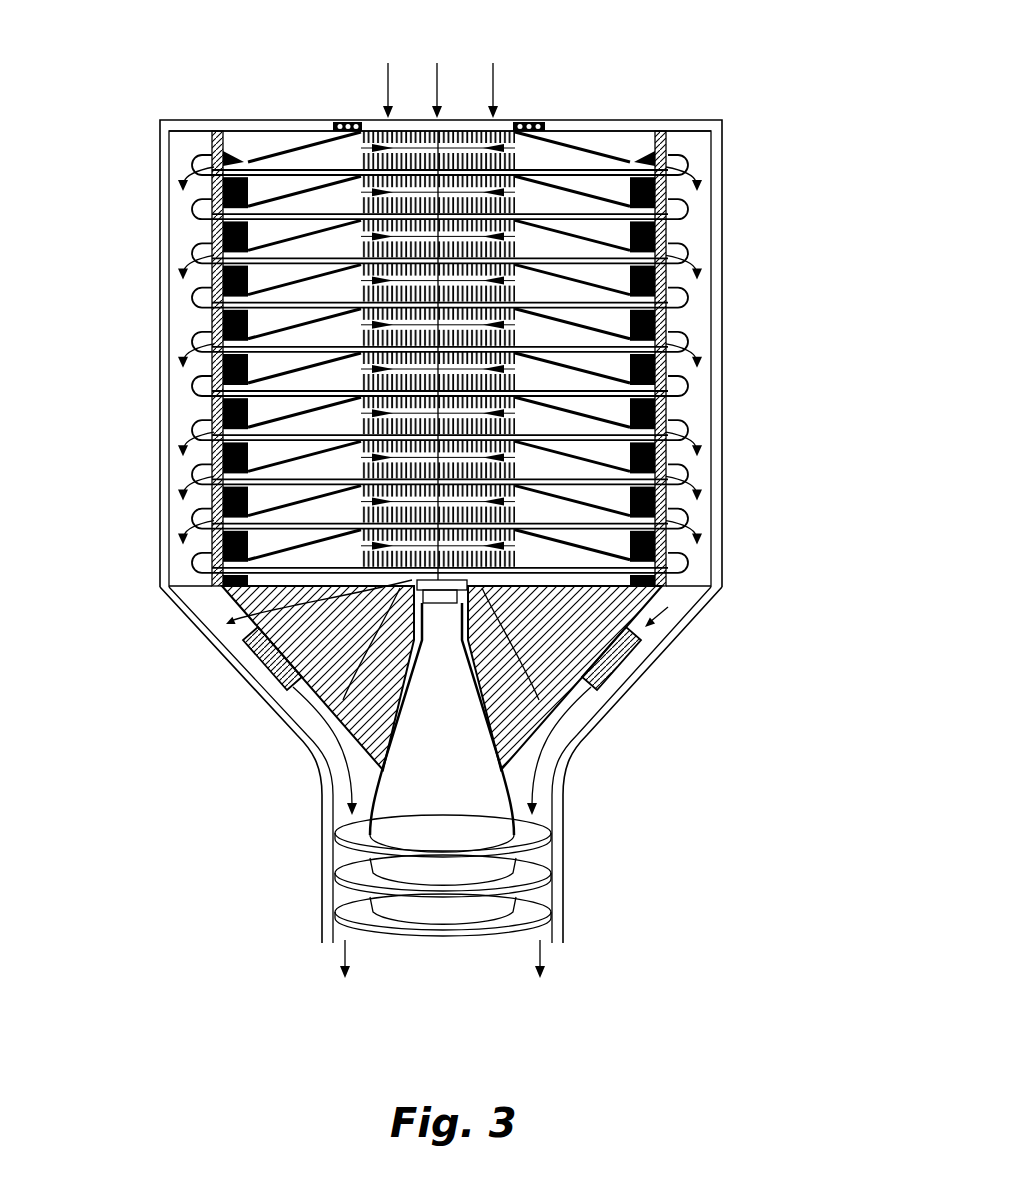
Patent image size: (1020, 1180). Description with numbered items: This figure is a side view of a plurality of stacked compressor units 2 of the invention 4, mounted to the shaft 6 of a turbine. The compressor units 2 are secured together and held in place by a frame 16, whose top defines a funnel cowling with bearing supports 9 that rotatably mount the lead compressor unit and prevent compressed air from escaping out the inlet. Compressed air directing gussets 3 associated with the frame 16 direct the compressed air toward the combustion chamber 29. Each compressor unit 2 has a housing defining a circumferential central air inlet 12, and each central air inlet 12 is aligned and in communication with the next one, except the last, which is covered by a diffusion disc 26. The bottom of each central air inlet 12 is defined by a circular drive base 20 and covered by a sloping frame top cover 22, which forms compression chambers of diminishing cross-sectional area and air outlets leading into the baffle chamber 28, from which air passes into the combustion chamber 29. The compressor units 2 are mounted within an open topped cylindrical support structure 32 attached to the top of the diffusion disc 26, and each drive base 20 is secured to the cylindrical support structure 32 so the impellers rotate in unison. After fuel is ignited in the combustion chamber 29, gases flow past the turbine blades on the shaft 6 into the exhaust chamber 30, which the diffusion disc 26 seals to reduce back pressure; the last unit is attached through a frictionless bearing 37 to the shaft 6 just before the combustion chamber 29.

The stacked compressor unit 2 is at (173, 190).
The compressed air directing gusset 3 is at (693, 141).
The invention 4 is at (815, 293).
The shaft 6 is at (440, 632).
The bearing support 9 is at (350, 124).
The central air inlet 12 is at (542, 180).
The frame 16 is at (722, 214).
The circular drive base 20 is at (282, 216).
The sloping frame top cover 22 is at (570, 150).
The diffusion disc 26 is at (224, 628).
The baffle chamber 28 is at (690, 425).
The combustion chamber 29 is at (540, 782).
The exhaust chamber 30 is at (475, 960).
The cylindrical support structure 32 is at (672, 600).
The frictionless bearing 37 is at (345, 700).